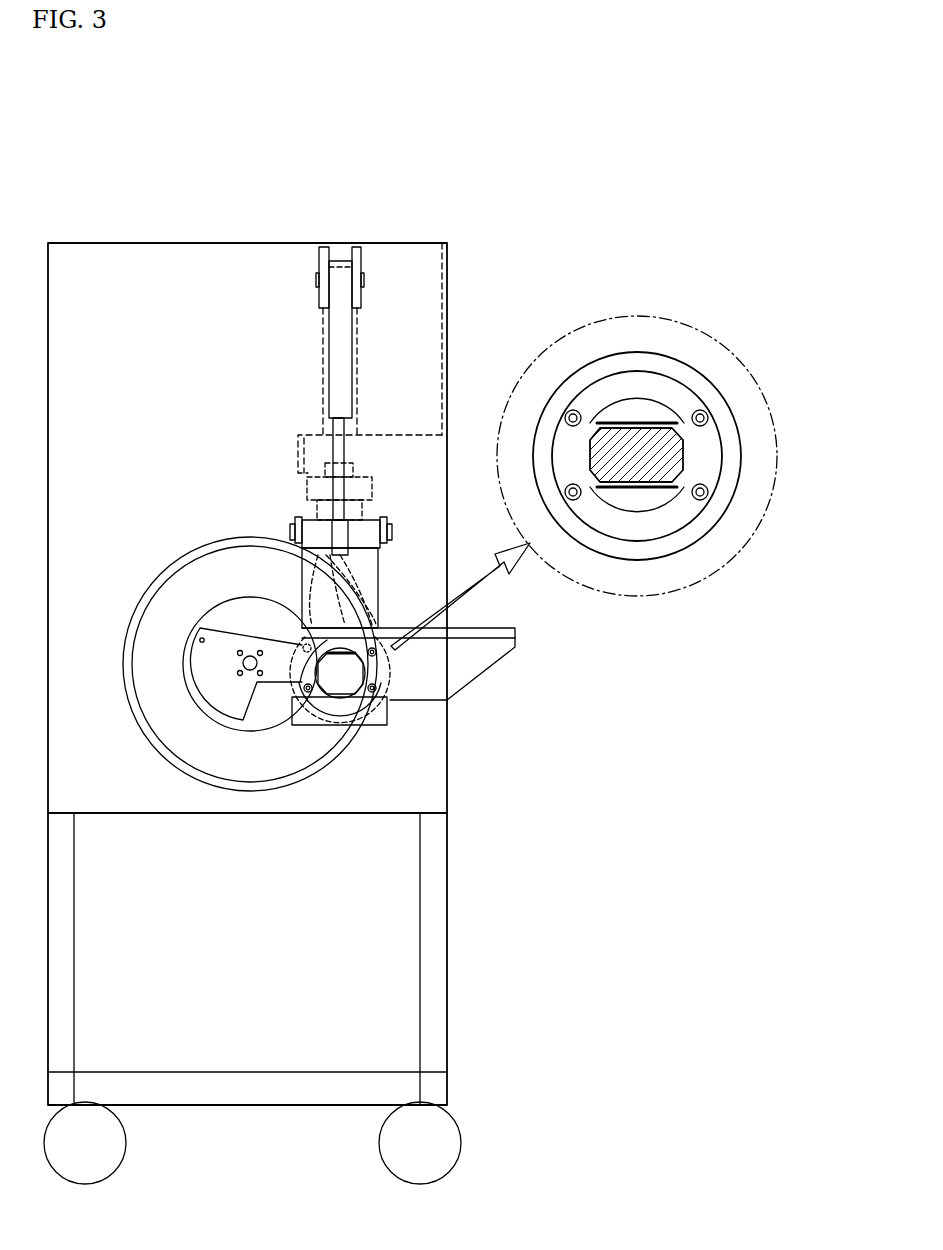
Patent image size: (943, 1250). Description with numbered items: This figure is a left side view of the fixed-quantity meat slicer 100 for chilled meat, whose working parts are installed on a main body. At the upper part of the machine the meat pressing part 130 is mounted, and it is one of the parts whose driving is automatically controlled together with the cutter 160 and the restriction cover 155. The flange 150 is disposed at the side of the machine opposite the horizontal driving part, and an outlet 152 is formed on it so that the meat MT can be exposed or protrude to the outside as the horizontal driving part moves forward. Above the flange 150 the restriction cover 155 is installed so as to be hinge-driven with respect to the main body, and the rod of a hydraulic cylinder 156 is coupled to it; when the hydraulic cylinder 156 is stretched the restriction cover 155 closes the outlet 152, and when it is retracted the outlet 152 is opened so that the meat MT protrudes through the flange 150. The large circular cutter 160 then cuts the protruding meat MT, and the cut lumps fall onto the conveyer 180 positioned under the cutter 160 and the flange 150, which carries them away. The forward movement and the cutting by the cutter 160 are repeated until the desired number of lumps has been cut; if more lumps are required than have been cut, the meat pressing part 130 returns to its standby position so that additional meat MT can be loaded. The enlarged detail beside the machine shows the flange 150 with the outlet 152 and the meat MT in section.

The fixed-quantity meat slicer 100 is at (391, 222).
The meat pressing part 130 is at (356, 507).
The flange 150 is at (392, 680).
The outlet 152 is at (627, 422).
The restriction cover 155 is at (337, 546).
The hydraulic cylinder 156 is at (340, 364).
The cutter 160 is at (278, 655).
The conveyer 180 is at (377, 720).
The meat MT is at (632, 470).